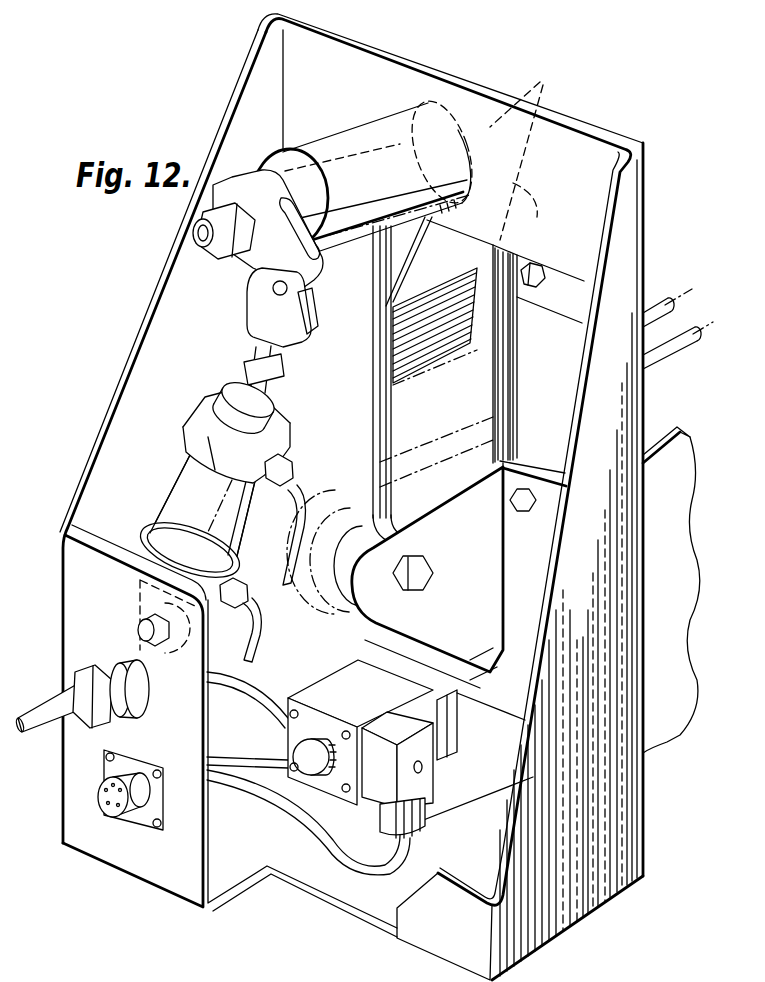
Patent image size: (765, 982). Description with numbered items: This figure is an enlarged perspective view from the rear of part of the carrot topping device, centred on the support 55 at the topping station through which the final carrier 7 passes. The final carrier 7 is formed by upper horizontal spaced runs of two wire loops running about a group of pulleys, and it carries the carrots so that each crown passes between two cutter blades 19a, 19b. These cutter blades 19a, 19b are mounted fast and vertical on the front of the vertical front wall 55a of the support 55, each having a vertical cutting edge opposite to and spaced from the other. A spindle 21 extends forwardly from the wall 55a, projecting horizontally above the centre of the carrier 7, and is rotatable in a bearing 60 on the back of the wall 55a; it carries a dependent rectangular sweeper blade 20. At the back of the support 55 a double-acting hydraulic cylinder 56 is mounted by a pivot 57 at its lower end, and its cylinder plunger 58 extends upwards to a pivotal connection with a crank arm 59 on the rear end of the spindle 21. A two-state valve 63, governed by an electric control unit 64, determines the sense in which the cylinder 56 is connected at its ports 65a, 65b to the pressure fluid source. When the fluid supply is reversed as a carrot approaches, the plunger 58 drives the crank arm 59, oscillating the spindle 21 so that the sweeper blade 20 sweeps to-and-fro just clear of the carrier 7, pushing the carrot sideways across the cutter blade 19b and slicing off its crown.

The final carrier 7 is at (685, 318).
The cutter blade 19a is at (383, 409).
The cutter blade 19b is at (503, 375).
The sweeper blade 20 is at (467, 267).
The spindle 21 is at (557, 113).
The support 55 is at (627, 633).
The vertical front wall 55a is at (393, 70).
The double-acting hydraulic cylinder 56 is at (180, 477).
The pivot 57 is at (142, 626).
The cylinder plunger 58 is at (250, 388).
The crank arm 59 is at (263, 258).
The bearing 60 is at (357, 128).
The two-state valve 63 is at (327, 777).
The electric control unit 64 is at (430, 783).
The port 65a is at (290, 465).
The port 65b is at (247, 628).